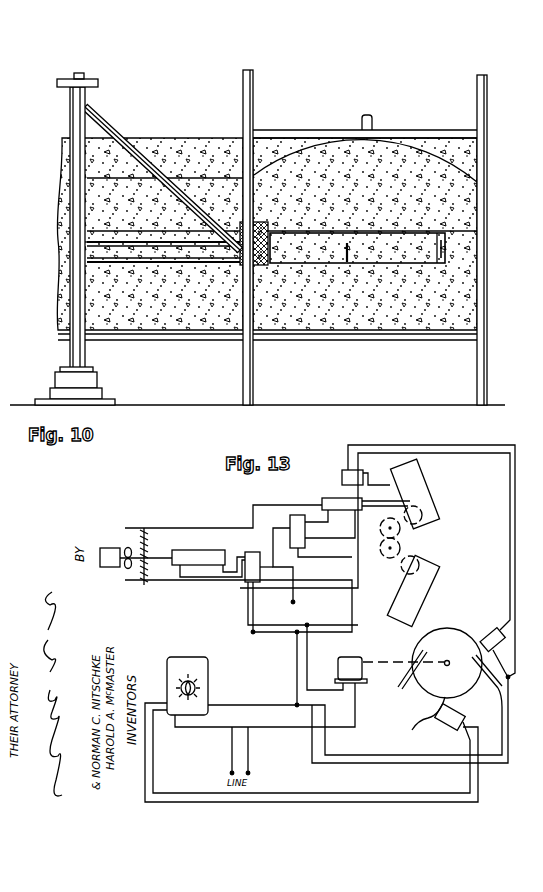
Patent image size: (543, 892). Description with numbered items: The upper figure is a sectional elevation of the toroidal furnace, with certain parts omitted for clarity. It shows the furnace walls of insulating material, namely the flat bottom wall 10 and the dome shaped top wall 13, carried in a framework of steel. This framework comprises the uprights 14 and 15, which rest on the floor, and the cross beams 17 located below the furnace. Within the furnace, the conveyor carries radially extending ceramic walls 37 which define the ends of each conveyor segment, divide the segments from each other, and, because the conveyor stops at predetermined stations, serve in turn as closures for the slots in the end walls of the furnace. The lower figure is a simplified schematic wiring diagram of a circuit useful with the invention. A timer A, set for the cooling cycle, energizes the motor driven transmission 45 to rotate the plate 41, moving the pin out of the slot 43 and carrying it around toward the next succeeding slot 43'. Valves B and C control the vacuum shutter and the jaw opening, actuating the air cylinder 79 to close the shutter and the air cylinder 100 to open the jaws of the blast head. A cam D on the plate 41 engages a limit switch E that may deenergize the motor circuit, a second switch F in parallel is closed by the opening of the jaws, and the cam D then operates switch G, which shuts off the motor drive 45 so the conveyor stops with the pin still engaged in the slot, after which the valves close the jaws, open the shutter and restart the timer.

In FIG. 10, the flat bottom wall 10 is at (352, 328).
In FIG. 10, the dome shaped top wall 13 is at (430, 158).
In FIG. 10, the upright 14 is at (477, 354).
In FIG. 10, the upright 15 is at (243, 347).
In FIG. 10, the cross beam 17 is at (318, 340).
In FIG. 10, the radially extending wall 37 is at (440, 237).
In FIG. 13, the plate 41 is at (450, 628).
In FIG. 13, the slot 43 is at (487, 684).
In FIG. 13, the next succeeding slot 43' is at (409, 683).
In FIG. 13, the motor driven transmission 45 is at (345, 660).
In FIG. 13, the air cylinder 79 is at (200, 550).
In FIG. 13, the air cylinder 100 is at (334, 498).